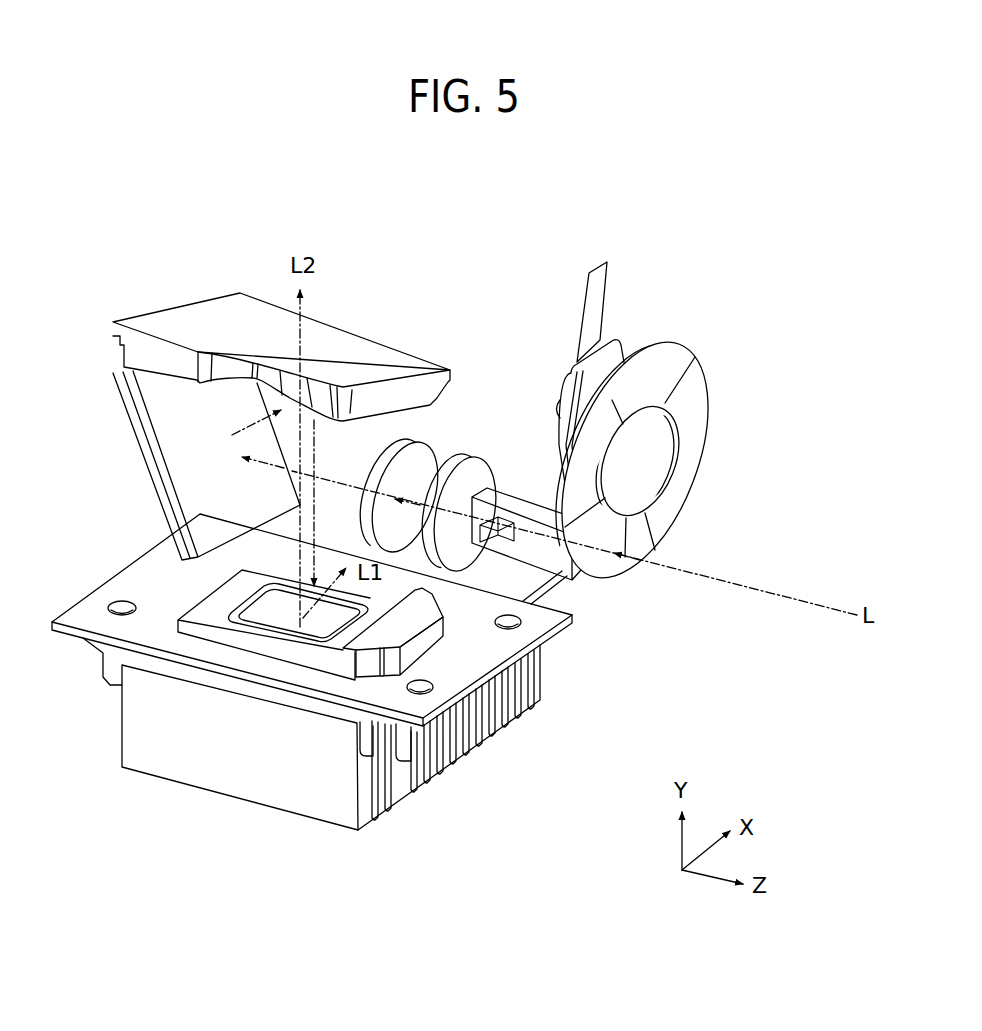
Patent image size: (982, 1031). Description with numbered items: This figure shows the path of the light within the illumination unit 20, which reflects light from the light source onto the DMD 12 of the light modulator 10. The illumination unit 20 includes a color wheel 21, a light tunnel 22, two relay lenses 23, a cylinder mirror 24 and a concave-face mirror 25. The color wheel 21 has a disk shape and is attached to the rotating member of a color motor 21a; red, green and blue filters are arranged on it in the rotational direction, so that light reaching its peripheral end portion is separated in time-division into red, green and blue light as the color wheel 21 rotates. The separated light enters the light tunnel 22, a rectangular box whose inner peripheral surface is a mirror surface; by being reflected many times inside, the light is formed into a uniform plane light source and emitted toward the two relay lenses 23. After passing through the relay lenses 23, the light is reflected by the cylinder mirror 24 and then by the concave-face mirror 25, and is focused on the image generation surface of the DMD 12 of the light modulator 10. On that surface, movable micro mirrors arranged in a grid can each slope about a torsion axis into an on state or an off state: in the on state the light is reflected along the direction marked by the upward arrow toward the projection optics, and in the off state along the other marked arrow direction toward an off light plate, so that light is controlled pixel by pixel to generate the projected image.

The light modulator 10 is at (216, 821).
The DMD 12 is at (273, 608).
The illumination unit 20 is at (715, 290).
The color wheel 21 is at (697, 409).
The color motor 21a is at (573, 447).
The light tunnel 22 is at (537, 552).
The relay lenses 23 is at (487, 460).
The cylinder mirror 24 is at (138, 433).
The concave-face mirror 25 is at (200, 310).